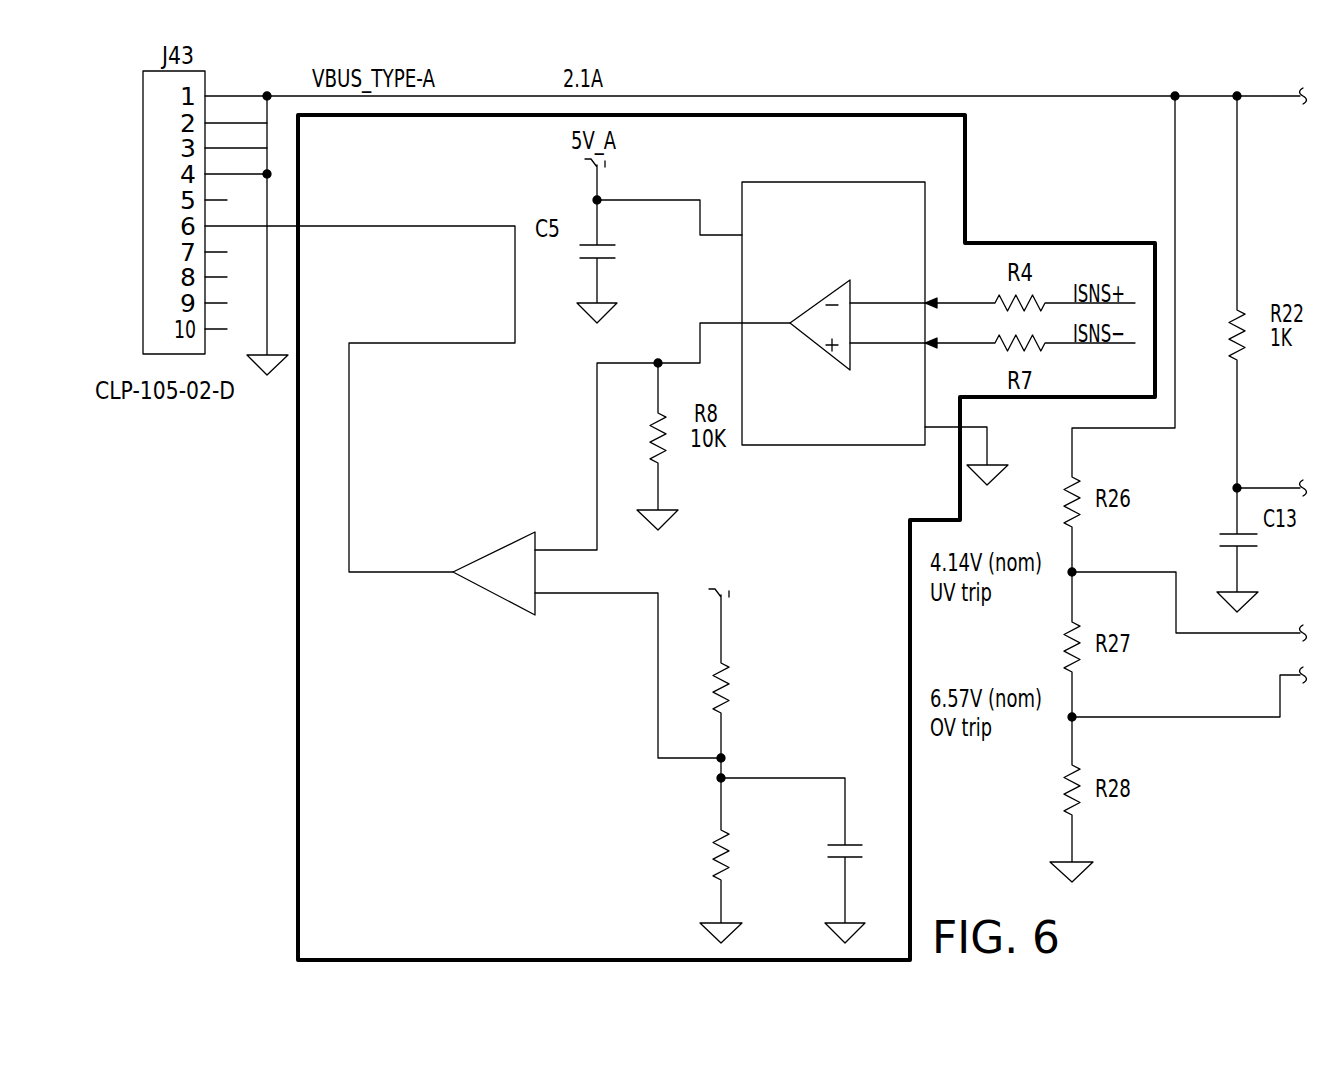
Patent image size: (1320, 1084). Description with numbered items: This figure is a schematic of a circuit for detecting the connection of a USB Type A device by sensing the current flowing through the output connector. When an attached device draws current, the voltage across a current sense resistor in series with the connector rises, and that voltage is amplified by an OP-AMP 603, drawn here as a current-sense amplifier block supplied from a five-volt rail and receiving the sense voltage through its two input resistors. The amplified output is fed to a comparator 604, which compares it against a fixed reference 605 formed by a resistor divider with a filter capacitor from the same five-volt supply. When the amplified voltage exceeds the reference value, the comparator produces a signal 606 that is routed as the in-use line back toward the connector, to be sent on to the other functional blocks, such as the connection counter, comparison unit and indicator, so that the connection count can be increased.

The OP-AMP 603 is at (815, 182).
The comparator 604 is at (513, 602).
The fixed reference 605 is at (712, 770).
The signal 606 is at (367, 228).